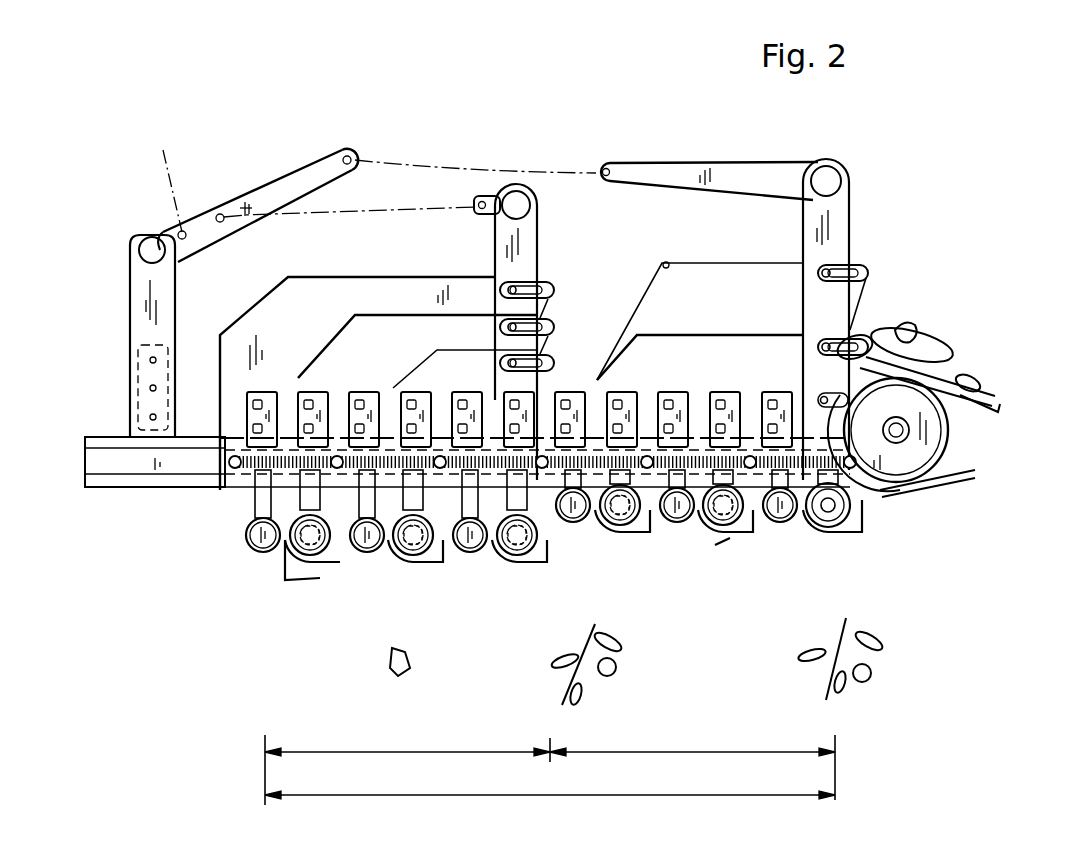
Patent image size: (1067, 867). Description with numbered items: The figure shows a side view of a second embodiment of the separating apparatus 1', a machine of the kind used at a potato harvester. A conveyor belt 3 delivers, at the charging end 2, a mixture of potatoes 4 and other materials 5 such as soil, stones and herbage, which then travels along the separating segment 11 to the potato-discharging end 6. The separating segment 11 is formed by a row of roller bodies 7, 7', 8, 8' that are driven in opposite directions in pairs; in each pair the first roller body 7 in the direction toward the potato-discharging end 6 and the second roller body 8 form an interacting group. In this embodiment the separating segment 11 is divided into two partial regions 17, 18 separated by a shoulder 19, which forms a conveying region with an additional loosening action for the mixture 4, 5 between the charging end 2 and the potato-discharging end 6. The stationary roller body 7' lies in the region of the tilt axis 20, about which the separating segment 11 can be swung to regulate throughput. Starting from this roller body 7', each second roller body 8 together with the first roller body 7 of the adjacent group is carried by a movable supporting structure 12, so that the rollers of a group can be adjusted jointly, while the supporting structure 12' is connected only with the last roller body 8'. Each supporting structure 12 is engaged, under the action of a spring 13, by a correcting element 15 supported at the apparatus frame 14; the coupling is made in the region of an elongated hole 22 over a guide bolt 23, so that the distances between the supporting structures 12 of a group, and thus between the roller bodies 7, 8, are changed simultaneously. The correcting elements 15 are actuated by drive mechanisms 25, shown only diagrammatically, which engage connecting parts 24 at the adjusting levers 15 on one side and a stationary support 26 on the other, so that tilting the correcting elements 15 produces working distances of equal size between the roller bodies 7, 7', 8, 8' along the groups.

The apparatus 1' is at (172, 99).
The charging end 2 is at (912, 280).
The conveyor belt 3 is at (980, 405).
The potatoes 4 is at (930, 364).
The other materials 5 is at (898, 333).
The potato-discharging end 6 is at (190, 520).
The first roller body 7 is at (519, 556).
The stationary first roller body 7' is at (823, 570).
The second roller body 8 is at (572, 551).
The last roller body 8' is at (265, 551).
The separating segment 11 is at (500, 797).
The supporting structure 12 is at (550, 305).
The supporting structure 12' is at (353, 381).
The spring 13 is at (365, 450).
The apparatus frame 14 is at (137, 480).
The correcting element 15 is at (528, 237).
The first partial region 17 is at (398, 752).
The second partial region 18 is at (658, 752).
The shoulder 19 is at (566, 542).
The tilt axis 20 is at (847, 525).
The elongated hole 22 is at (533, 290).
The guide bolt 23 is at (510, 324).
The connecting part 24 is at (487, 198).
The drive mechanism 25 is at (170, 180).
The stationary support 26 is at (148, 292).